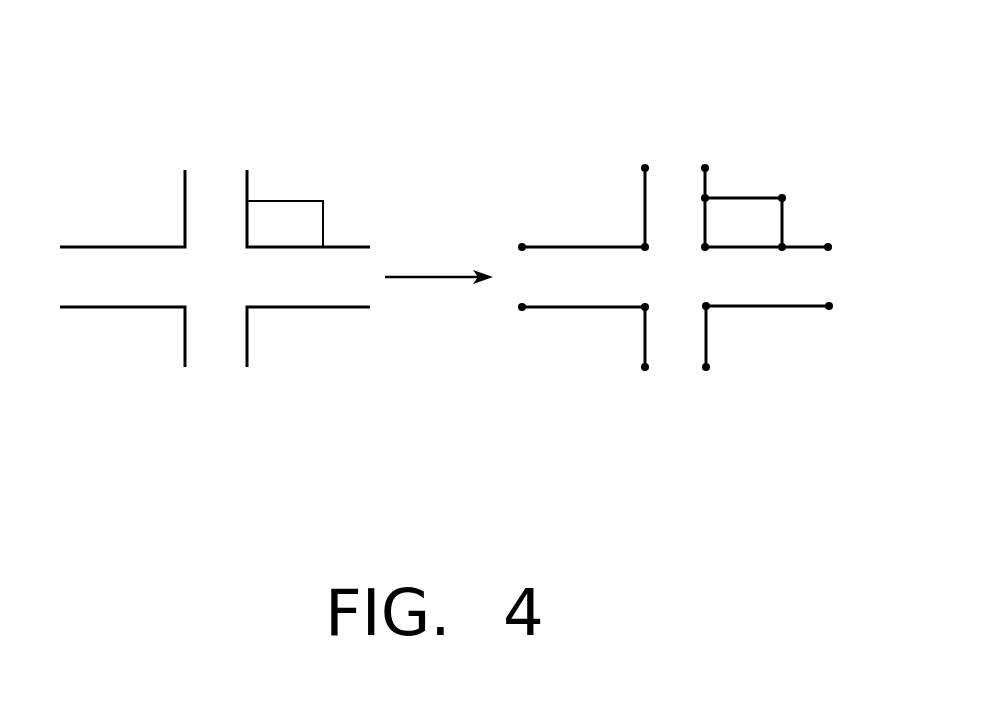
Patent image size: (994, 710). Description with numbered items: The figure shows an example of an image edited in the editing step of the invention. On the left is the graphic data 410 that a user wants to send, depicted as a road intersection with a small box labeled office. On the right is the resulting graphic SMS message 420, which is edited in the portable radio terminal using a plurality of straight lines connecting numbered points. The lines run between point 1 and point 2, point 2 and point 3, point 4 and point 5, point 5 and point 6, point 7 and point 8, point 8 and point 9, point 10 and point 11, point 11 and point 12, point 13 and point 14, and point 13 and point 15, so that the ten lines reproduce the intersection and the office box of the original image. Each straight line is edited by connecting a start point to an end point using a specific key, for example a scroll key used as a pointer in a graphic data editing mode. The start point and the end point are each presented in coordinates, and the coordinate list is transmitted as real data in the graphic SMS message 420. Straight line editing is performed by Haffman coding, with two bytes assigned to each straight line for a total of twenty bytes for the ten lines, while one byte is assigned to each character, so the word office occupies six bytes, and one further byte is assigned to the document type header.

The graphic data 410 is at (377, 110).
The graphic SMS message 420 is at (705, 226).
The point 1 is at (522, 243).
The point 2 is at (643, 250).
The point 3 is at (645, 164).
The point 4 is at (522, 312).
The point 5 is at (644, 310).
The point 6 is at (645, 372).
The point 7 is at (706, 372).
The point 8 is at (710, 310).
The point 9 is at (833, 306).
The point 10 is at (832, 247).
The point 11 is at (708, 250).
The point 12 is at (705, 164).
The point 13 is at (785, 197).
The point 14 is at (785, 250).
The point 15 is at (707, 197).